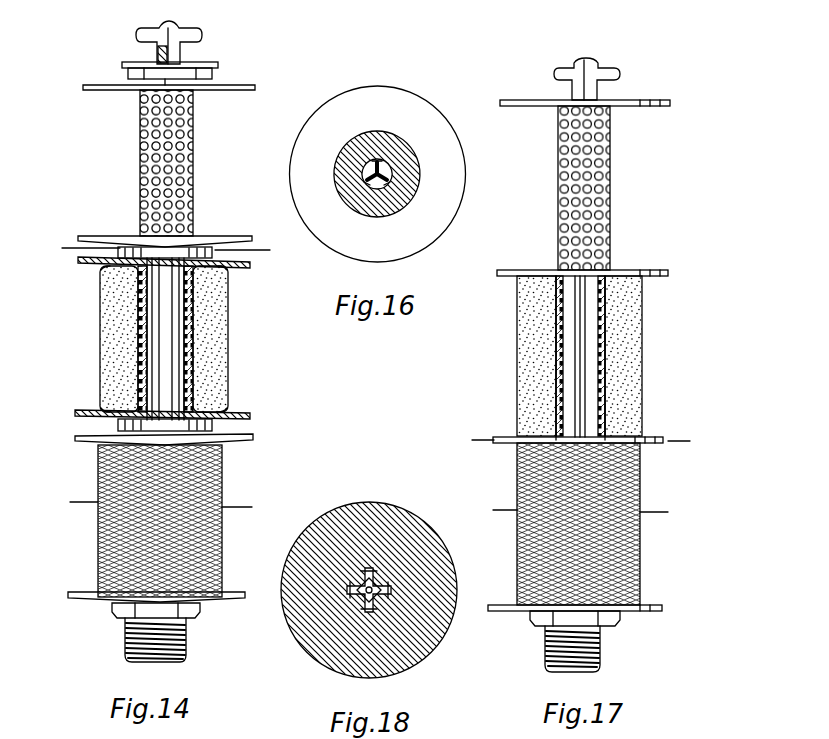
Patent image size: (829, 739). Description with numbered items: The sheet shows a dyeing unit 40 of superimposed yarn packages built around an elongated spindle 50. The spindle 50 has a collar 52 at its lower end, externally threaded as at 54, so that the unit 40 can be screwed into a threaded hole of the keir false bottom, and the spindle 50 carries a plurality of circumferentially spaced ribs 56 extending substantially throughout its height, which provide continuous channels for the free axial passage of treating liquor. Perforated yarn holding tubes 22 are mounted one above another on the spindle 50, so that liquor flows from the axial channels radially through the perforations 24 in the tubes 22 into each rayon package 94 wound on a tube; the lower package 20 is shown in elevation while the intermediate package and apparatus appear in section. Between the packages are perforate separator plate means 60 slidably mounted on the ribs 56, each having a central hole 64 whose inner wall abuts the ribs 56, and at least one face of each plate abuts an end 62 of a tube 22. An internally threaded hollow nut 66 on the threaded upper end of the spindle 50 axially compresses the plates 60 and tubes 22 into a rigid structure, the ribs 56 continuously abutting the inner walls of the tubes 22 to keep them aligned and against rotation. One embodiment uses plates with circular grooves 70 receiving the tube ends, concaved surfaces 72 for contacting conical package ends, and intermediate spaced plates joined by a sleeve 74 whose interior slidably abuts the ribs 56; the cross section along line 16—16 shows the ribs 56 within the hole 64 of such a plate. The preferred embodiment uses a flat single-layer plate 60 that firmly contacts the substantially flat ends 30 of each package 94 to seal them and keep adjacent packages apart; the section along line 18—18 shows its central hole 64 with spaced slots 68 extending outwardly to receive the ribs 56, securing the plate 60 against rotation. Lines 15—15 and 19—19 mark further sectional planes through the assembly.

In FIG. 14, the section line 15- 15 is at (162, 507).
In FIG. 14, the section line 16- 16 is at (167, 249).
In FIG. 17, the section line 18- 18 is at (581, 441).
In FIG. 17, the section line 19- 19 is at (579, 513).
In FIG. 14, the yarn package 20 is at (228, 355).
In FIG. 17, the yarn package 20 is at (643, 376).
In FIG. 14, the perforated yarn holding tube 22 is at (194, 207).
In FIG. 17, the perforated yarn holding tube 22 is at (612, 212).
In FIG. 14, the perforations 24 is at (183, 137).
In FIG. 17, the perforations 24 is at (600, 148).
In FIG. 17, the flat end of package 30 is at (647, 446).
In FIG. 14, the unit 40 is at (257, 386).
In FIG. 17, the unit 40 is at (700, 401).
In FIG. 14, the spindle 50 is at (172, 327).
In FIG. 18, the spindle 50 is at (357, 596).
In FIG. 17, the spindle 50 is at (585, 341).
In FIG. 14, the collar 52 is at (201, 612).
In FIG. 17, the collar 52 is at (575, 618).
In FIG. 14, the external thread 54 is at (186, 648).
In FIG. 17, the external thread 54 is at (572, 649).
In FIG. 16, the ribs 56 is at (390, 176).
In FIG. 18, the ribs 56 is at (344, 590).
In FIG. 14, the separator plate means 60 is at (88, 88).
In FIG. 16, the separator plate means 60 is at (424, 242).
In FIG. 18, the separator plate means 60 is at (360, 502).
In FIG. 17, the separator plate means 60 is at (672, 103).
In FIG. 14, the tube end 62 is at (215, 264).
In FIG. 17, the tube end 62 is at (612, 280).
In FIG. 16, the central hole 64 is at (392, 186).
In FIG. 18, the central hole 64 is at (385, 600).
In FIG. 14, the hollow nut 66 is at (182, 53).
In FIG. 17, the hollow nut 66 is at (600, 88).
In FIG. 18, the slots 68 is at (389, 588).
In FIG. 14, the circular grooves 70 is at (138, 264).
In FIG. 14, the concaved surface 72 is at (90, 412).
In FIG. 14, the sleeve 74 is at (118, 427).
In FIG. 14, the rayon package 94 is at (105, 350).
In FIG. 17, the rayon package 94 is at (518, 395).